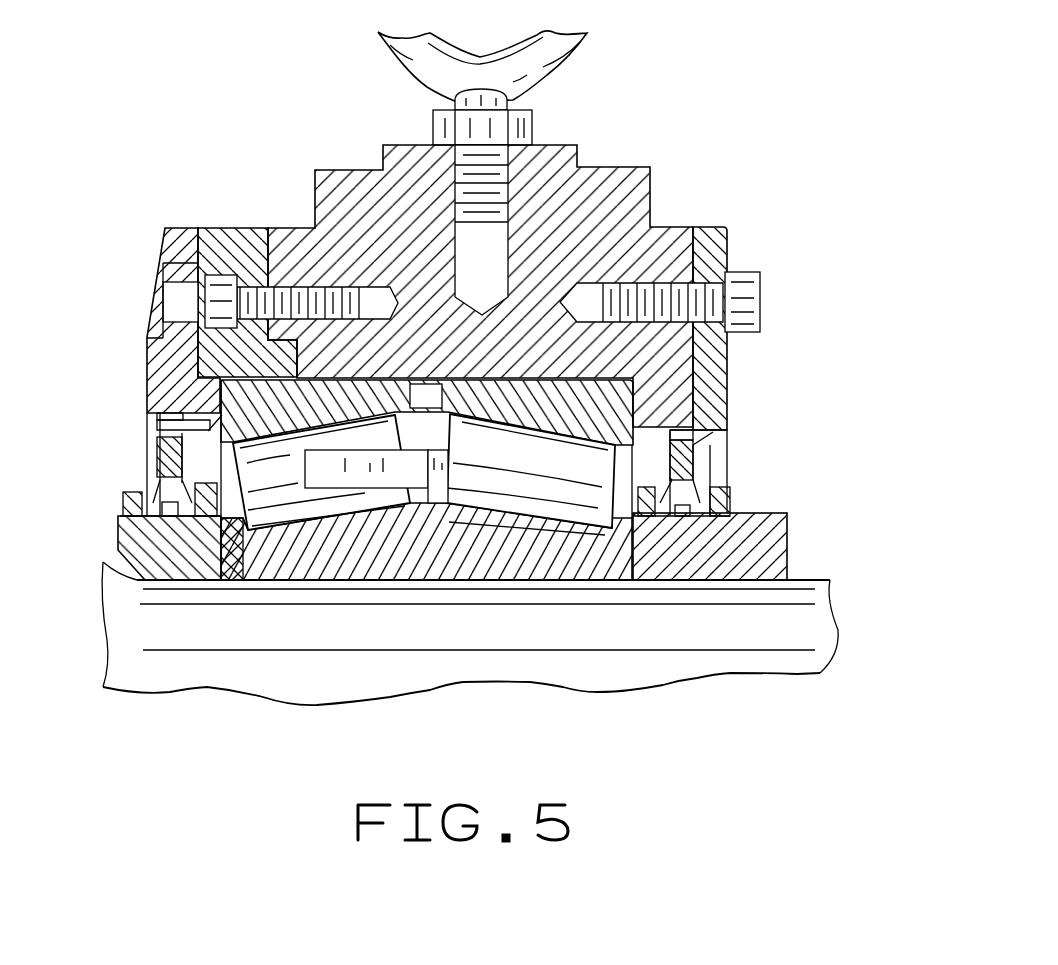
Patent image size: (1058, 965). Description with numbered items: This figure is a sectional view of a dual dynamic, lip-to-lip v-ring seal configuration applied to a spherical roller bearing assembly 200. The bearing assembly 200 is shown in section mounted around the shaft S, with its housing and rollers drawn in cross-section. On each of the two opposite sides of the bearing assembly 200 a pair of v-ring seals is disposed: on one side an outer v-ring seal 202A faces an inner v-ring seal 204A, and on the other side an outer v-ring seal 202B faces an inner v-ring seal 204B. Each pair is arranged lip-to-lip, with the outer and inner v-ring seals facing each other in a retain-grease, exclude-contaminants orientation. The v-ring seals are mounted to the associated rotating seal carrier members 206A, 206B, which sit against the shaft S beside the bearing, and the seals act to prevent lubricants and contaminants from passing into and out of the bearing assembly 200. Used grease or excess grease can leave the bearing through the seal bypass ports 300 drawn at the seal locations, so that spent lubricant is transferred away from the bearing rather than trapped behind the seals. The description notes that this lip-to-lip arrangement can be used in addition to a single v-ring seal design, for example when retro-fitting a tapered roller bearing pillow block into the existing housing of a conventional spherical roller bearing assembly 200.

The spherical roller bearing assembly 200 is at (615, 138).
The used grease/excess grease seal bypass port 300 is at (155, 437).
The outer v-ring seal 202A is at (132, 490).
The outer v-ring seal 202B is at (717, 490).
The inner v-ring seal 204A is at (250, 522).
The inner v-ring seal 204B is at (732, 510).
The rotating seal carrier member 206A is at (175, 548).
The rotating seal carrier member 206B is at (752, 550).
The shaft S is at (492, 667).